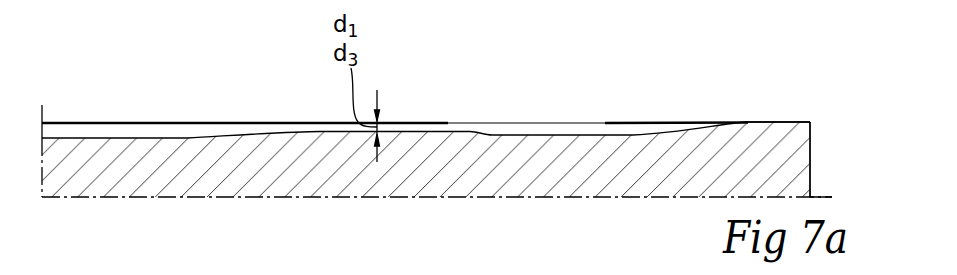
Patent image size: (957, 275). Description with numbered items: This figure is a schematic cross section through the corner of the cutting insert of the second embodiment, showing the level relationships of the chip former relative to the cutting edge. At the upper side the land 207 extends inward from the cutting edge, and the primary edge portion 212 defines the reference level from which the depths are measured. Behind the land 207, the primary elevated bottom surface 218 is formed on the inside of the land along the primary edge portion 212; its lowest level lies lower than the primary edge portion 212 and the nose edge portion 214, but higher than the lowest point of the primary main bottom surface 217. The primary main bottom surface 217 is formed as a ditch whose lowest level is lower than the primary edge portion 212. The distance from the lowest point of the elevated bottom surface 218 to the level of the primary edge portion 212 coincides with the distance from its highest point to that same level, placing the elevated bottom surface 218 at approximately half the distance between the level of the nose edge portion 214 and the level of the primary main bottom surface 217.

The primary edge portion 212 is at (77, 122).
The primary main bottom surface 217 is at (137, 137).
The primary elevated bottom surface 218 is at (423, 131).
The land 207 is at (768, 122).
The nose edge portion 214 is at (810, 122).